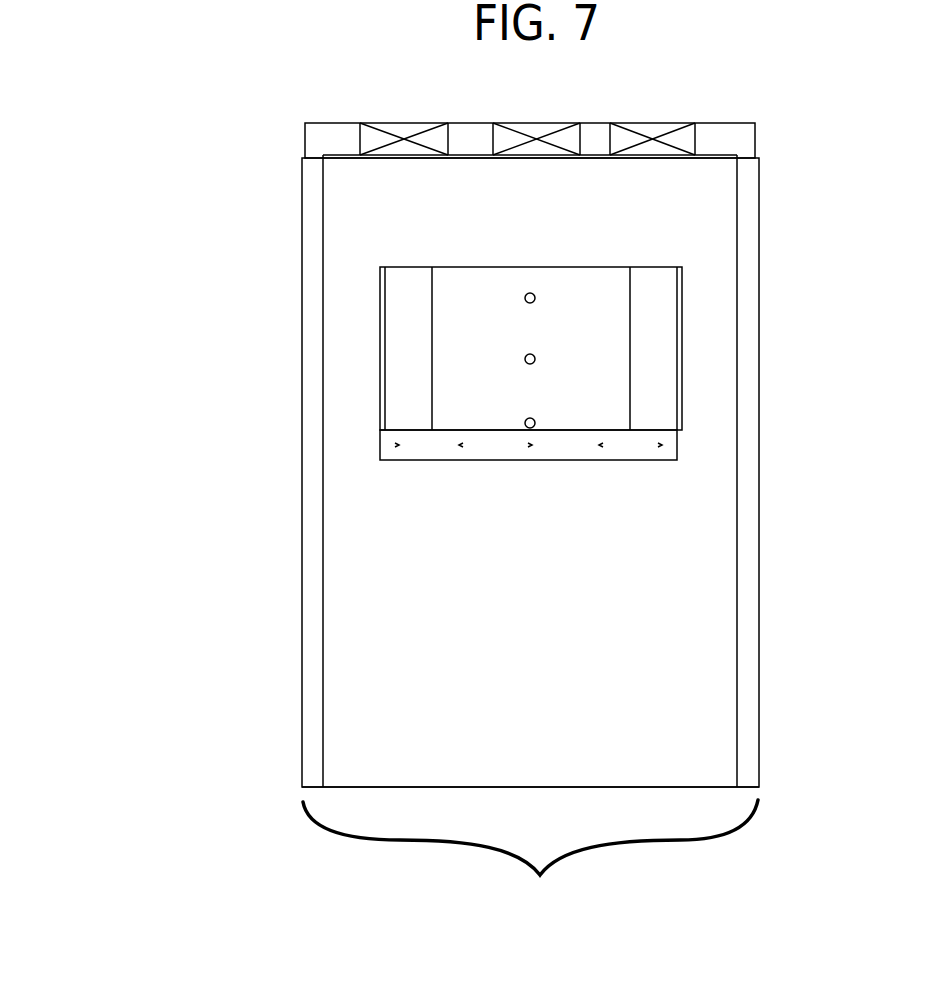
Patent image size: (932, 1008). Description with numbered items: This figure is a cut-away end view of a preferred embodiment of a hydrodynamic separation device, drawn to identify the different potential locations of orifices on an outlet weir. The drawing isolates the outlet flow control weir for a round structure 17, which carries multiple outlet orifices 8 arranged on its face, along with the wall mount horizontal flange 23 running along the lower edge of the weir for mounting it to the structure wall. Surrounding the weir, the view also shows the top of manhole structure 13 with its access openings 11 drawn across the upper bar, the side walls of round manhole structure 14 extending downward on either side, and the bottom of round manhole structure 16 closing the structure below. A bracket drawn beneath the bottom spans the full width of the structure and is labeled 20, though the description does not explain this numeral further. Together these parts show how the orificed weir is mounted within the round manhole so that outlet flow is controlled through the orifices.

The outlet orifices 8 is at (534, 357).
The access openings 11 is at (672, 135).
The top of manhole structure 13 is at (348, 132).
The side walls of round manhole structure 14 is at (317, 638).
The bottom of round manhole structure 16 is at (663, 792).
The outlet flow control weir for a round structure 17 is at (407, 358).
The base 20 is at (530, 867).
The wall mount horizontal flange 23 is at (655, 453).